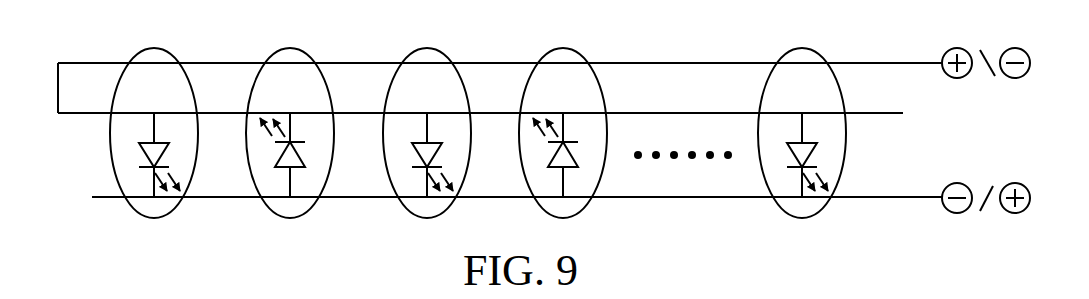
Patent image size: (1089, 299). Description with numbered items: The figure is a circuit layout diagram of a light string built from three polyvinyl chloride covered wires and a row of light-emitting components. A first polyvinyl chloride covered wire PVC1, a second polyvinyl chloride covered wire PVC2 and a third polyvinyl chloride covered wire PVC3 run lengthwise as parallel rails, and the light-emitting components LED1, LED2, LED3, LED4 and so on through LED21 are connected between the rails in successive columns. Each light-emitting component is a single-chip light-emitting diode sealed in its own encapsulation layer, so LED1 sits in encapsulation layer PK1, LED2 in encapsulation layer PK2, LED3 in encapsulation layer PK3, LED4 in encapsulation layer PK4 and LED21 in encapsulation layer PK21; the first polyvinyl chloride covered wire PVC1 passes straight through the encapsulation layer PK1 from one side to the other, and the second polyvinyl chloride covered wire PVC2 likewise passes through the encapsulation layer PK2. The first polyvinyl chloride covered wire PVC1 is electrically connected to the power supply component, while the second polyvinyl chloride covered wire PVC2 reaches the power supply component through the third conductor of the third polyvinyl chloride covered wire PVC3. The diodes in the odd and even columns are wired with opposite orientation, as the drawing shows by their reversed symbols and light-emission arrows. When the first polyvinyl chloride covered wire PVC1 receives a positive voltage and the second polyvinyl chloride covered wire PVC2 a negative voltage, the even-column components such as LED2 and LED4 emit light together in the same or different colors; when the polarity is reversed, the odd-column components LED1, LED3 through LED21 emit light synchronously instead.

The light-emitting component LED1 is at (145, 142).
The light-emitting component LED2 is at (298, 167).
The light-emitting component LED3 is at (422, 142).
The light-emitting component LED4 is at (568, 167).
The light-emitting component LED21 is at (795, 142).
The encapsulation layer PK1 is at (193, 85).
The encapsulation layer PK2 is at (330, 85).
The encapsulation layer PK3 is at (467, 85).
The encapsulation layer PK4 is at (603, 83).
The encapsulation layer PK21 is at (842, 83).
The first polyvinyl chloride covered wire PVC1 is at (907, 198).
The second polyvinyl chloride covered wire PVC2 is at (883, 114).
The third polyvinyl chloride covered wire PVC3 is at (913, 62).